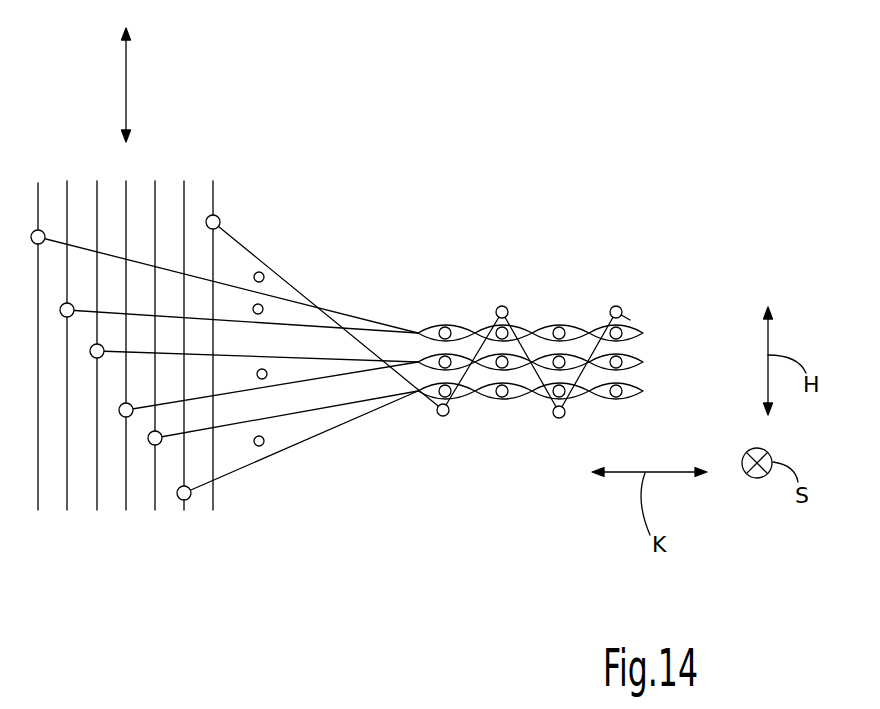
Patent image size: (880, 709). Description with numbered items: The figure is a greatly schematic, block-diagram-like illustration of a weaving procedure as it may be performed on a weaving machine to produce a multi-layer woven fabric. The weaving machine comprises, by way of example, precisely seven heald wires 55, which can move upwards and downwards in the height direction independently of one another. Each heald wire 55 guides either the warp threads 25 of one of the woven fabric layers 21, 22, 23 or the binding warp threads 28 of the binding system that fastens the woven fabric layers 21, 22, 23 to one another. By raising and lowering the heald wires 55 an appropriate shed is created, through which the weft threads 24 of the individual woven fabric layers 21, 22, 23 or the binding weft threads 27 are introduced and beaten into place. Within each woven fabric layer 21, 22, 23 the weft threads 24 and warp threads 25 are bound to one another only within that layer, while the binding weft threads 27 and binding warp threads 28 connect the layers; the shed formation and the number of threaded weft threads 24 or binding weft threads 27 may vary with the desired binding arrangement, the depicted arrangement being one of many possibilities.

The woven fabric layer 21 is at (663, 314).
The woven fabric layer 22 is at (656, 409).
The woven fabric layer 23 is at (665, 345).
The weft thread 24 is at (562, 406).
The warp thread 25 is at (368, 328).
The binding weft thread 27 is at (263, 274).
The binding warp thread 28 is at (248, 247).
The heald wire 55 is at (155, 200).